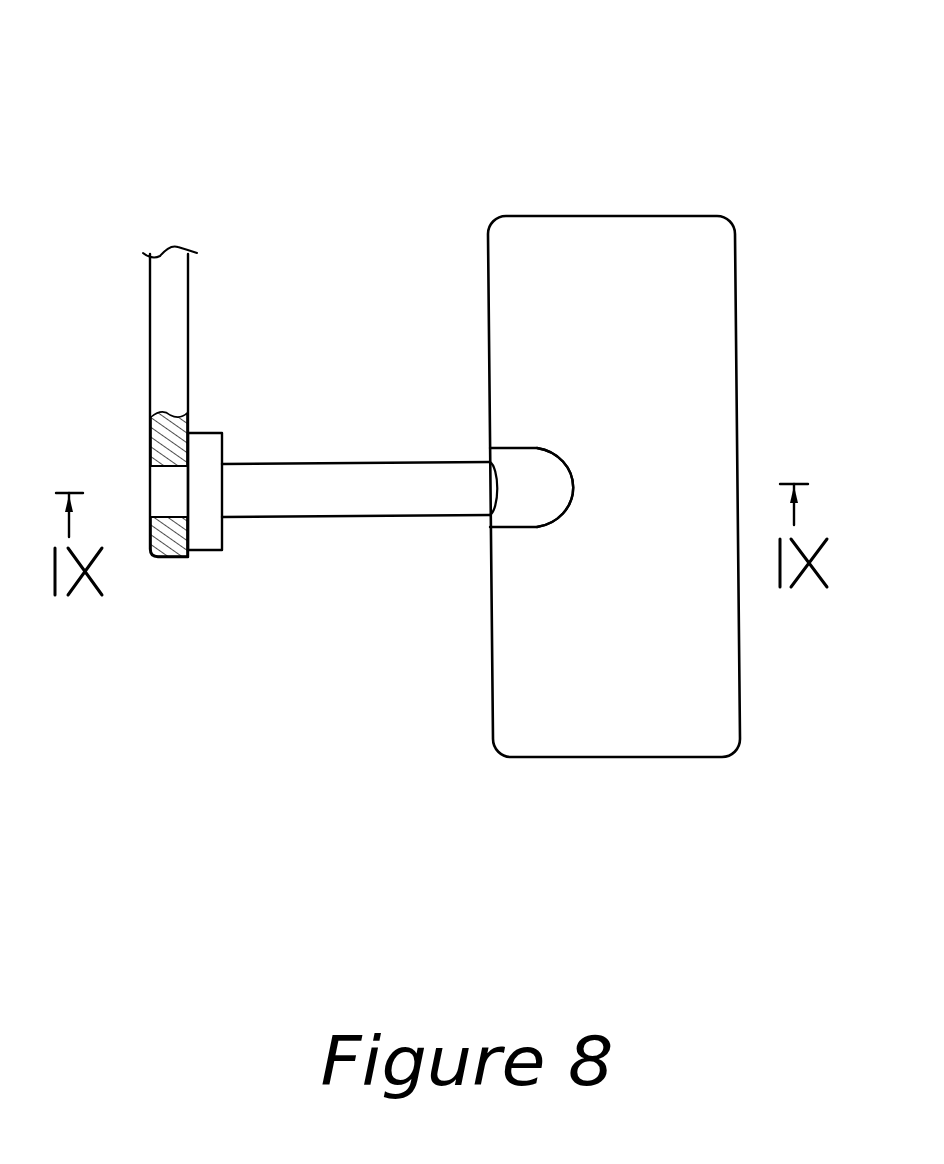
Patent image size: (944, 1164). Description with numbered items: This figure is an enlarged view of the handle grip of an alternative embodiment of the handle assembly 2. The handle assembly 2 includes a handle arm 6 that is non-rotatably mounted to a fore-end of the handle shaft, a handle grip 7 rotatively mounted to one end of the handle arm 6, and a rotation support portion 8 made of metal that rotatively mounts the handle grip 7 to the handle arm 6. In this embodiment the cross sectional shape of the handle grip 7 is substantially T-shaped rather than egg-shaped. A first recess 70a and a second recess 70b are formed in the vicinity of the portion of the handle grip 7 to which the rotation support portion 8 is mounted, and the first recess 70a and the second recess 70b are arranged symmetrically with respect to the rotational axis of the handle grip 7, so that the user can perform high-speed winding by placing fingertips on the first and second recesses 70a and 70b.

The handle assembly 2 is at (372, 184).
The handle arm 6 is at (188, 310).
The handle grip 7 is at (735, 343).
The rotation support portion 8 is at (165, 478).
The first recess 70a is at (523, 528).
The second recess 70b is at (553, 448).